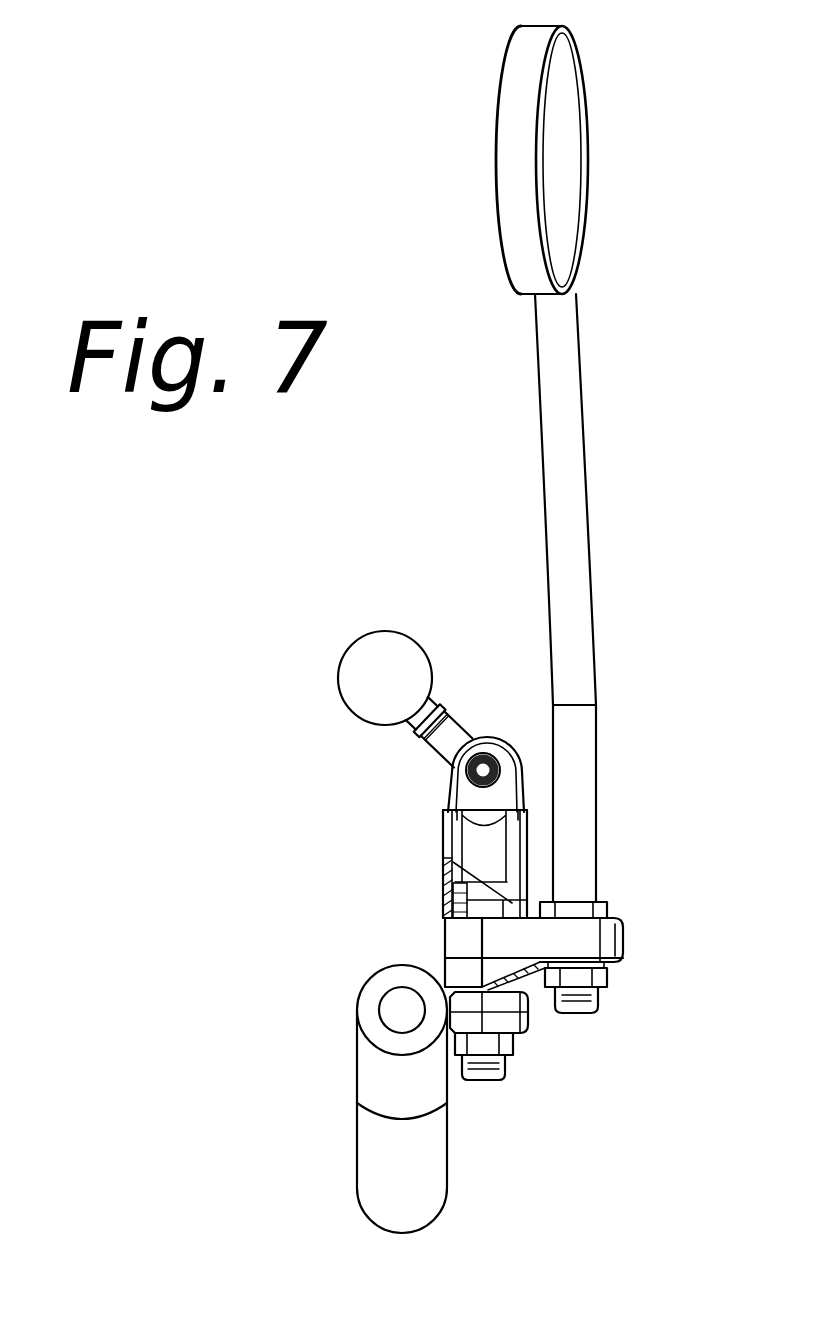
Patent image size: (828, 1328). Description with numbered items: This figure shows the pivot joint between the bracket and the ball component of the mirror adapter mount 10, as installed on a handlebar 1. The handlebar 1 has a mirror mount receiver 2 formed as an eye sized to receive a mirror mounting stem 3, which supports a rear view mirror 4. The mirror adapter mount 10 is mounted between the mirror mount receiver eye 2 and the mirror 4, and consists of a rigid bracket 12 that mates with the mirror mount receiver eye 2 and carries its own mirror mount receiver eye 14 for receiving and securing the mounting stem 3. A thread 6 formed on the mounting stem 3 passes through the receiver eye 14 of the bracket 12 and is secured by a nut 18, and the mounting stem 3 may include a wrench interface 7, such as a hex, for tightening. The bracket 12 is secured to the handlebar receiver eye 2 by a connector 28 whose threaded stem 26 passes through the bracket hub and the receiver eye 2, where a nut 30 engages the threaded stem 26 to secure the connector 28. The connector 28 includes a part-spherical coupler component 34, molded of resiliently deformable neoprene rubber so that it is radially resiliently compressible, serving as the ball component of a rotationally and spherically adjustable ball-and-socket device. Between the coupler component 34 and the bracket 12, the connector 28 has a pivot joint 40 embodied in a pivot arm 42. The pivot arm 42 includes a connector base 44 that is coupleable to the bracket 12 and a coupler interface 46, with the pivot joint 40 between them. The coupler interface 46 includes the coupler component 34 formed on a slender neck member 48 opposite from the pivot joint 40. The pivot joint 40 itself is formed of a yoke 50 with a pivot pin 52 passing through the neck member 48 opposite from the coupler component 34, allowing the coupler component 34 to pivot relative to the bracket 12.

The handlebar 1 is at (358, 984).
The mirror mount receiver 2 is at (530, 1012).
The mirror mounting stem 3 is at (597, 537).
The rear view mirror 4 is at (495, 122).
The thread 6 is at (598, 1010).
The wrench interface 7 is at (607, 905).
The mirror adapter mount 10 is at (302, 778).
The bracket 12 is at (442, 952).
The mirror mount receiver eye 14 is at (623, 940).
The nut 18 is at (607, 975).
The stem 26 is at (505, 1080).
The connector 28 is at (446, 894).
The nut 30 is at (513, 1045).
The part-spherical coupler component 34 is at (345, 652).
The pivot joint 40 is at (512, 747).
The pivot arm 42 is at (444, 848).
The connector base 44 is at (443, 877).
The coupler interface 46 is at (483, 720).
The slender neck member 48 is at (442, 692).
The yoke 50 is at (447, 753).
The pivot pin 52 is at (465, 776).